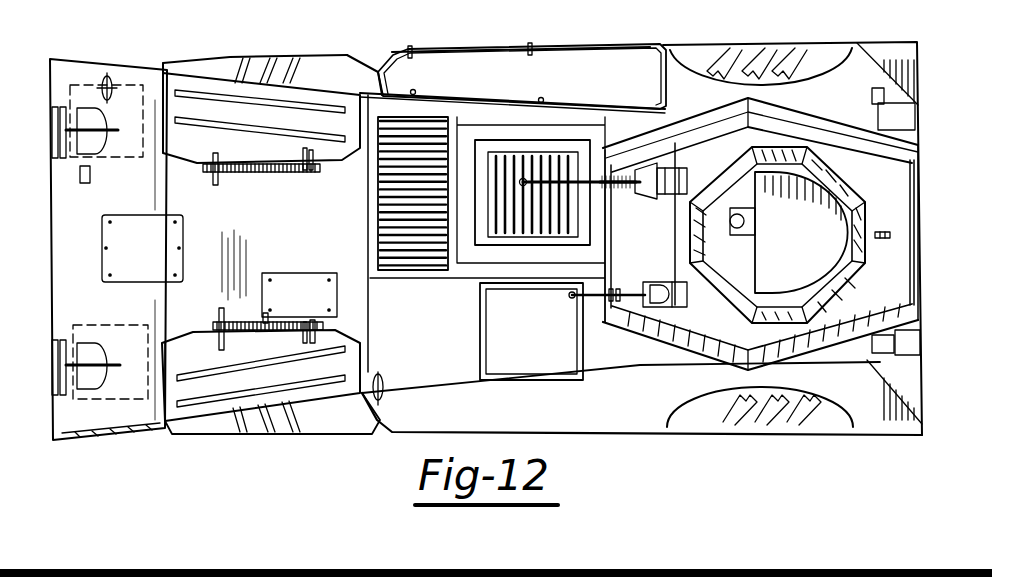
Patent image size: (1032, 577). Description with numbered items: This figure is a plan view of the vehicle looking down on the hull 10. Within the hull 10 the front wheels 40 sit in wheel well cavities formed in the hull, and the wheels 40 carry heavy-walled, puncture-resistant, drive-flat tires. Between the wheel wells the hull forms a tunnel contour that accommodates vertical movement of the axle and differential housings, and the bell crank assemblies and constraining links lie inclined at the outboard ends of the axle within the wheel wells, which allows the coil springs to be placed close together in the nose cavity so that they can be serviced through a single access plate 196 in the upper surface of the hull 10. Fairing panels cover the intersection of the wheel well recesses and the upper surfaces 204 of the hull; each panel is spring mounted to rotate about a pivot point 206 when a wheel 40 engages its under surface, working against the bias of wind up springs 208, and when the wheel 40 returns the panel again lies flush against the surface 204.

The hull 10 is at (134, 430).
The vehicle wheel 40 is at (172, 62).
The access plate 196 is at (105, 218).
The upper surface of the hull 204 is at (156, 100).
The pivot point 206 is at (213, 322).
The wind up spring 208 is at (243, 322).